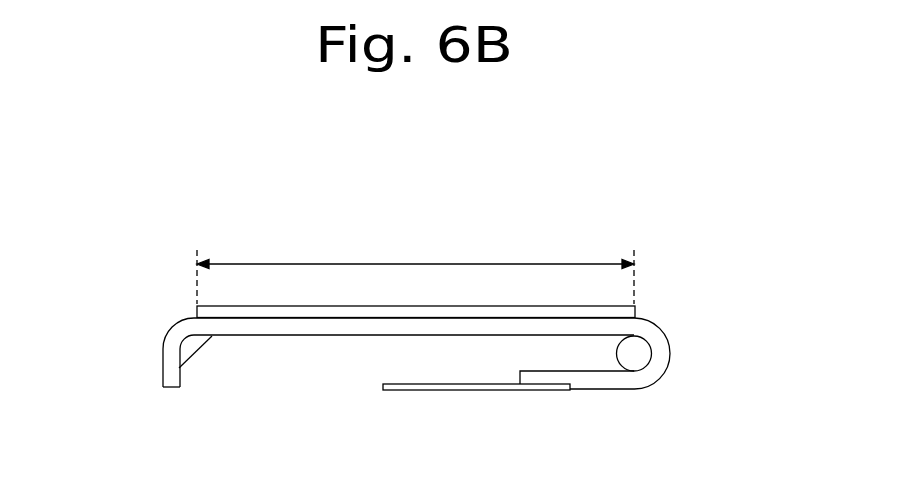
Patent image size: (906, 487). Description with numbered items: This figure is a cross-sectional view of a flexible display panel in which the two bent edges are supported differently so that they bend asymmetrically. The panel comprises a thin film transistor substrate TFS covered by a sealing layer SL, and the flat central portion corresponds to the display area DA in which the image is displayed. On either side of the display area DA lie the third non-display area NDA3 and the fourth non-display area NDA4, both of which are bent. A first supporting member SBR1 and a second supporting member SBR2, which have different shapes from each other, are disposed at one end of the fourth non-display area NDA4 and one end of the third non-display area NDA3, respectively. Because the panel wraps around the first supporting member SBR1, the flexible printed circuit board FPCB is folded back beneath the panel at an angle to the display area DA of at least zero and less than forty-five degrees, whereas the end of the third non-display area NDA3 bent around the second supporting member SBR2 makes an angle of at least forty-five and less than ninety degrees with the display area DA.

The sealing layer SL is at (266, 312).
The thin film transistor substrate TFS is at (328, 325).
The first supporting member SBR1 is at (634, 357).
The second supporting member SBR2 is at (193, 343).
The flexible printed circuit board FPCB is at (472, 389).
The display area DA is at (415, 271).
The third non-display area NDA3 is at (152, 347).
The fourth non-display area NDA4 is at (679, 348).